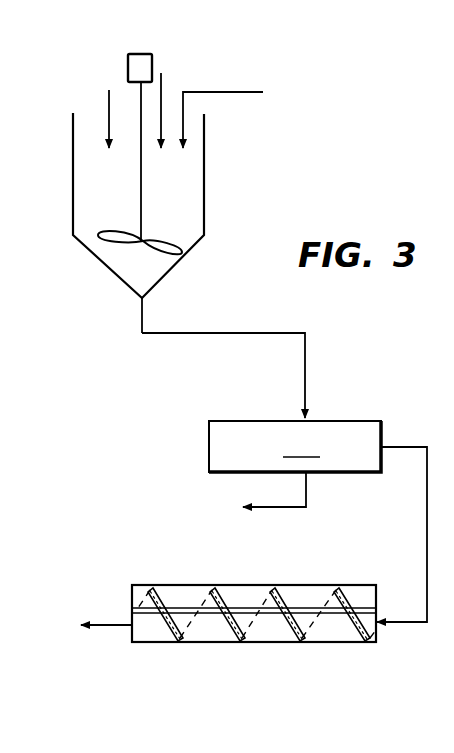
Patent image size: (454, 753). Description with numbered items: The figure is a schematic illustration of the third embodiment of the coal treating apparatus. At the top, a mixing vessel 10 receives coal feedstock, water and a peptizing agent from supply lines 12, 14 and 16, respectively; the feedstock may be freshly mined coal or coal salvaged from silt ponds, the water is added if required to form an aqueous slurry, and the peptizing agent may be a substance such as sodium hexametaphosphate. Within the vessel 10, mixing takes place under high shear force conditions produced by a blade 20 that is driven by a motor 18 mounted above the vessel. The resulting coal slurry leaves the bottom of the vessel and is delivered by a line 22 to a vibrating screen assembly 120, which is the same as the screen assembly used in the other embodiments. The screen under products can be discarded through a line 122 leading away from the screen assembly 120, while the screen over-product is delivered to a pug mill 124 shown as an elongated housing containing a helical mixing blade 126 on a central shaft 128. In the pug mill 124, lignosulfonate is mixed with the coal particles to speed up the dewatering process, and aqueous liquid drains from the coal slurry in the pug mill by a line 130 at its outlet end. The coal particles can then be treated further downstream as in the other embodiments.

The mixing vessel 10 is at (204, 172).
The coal feed stock supply line 12 is at (108, 97).
The water line 14 is at (162, 86).
The peptizing agent line 16 is at (223, 92).
The motor 18 is at (128, 66).
The blade 20 is at (113, 247).
The line 22 is at (258, 333).
The vibrating screen assembly 120 is at (295, 446).
The line 122 is at (278, 507).
The pug mill 124 is at (272, 585).
The helical mixing blade 126 is at (226, 629).
The conveyor shaft 128 is at (273, 613).
The line 130 is at (117, 622).